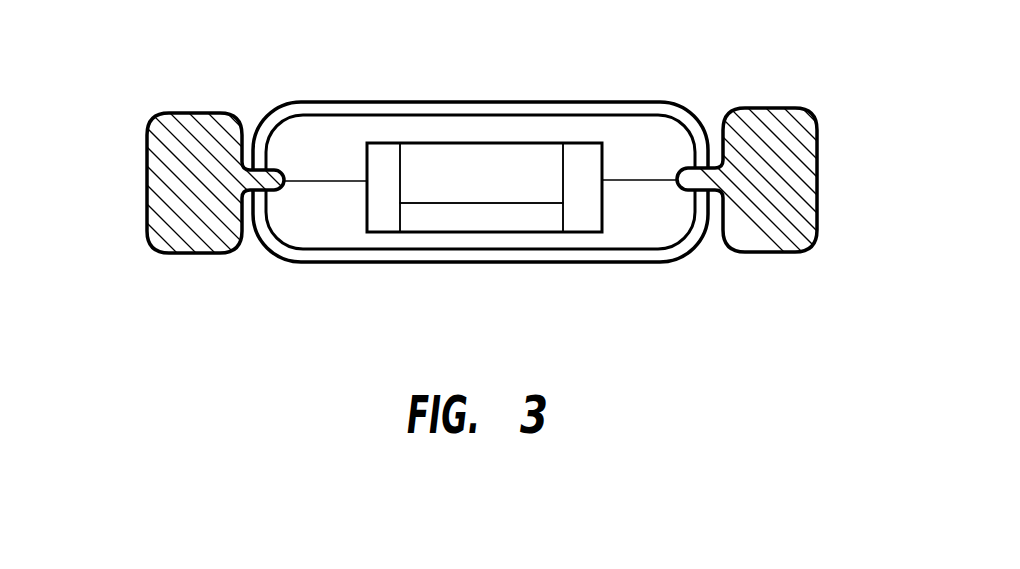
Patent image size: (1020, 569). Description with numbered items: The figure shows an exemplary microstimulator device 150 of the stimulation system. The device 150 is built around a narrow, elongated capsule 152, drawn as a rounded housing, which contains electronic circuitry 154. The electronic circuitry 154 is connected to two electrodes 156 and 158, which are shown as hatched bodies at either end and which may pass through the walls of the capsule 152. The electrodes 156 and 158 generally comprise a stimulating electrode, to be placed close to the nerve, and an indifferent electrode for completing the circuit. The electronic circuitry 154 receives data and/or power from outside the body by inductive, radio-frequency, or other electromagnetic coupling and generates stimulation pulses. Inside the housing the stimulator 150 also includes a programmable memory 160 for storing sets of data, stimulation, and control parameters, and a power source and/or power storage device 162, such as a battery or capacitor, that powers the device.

The microstimulator device 150 is at (106, 90).
The capsule 152 is at (647, 250).
The electronic circuitry 154 is at (470, 143).
The electrode 156 is at (147, 170).
The electrode 158 is at (817, 175).
The programmable memory 160 is at (367, 203).
The power source and/or power storage device 162 is at (477, 233).